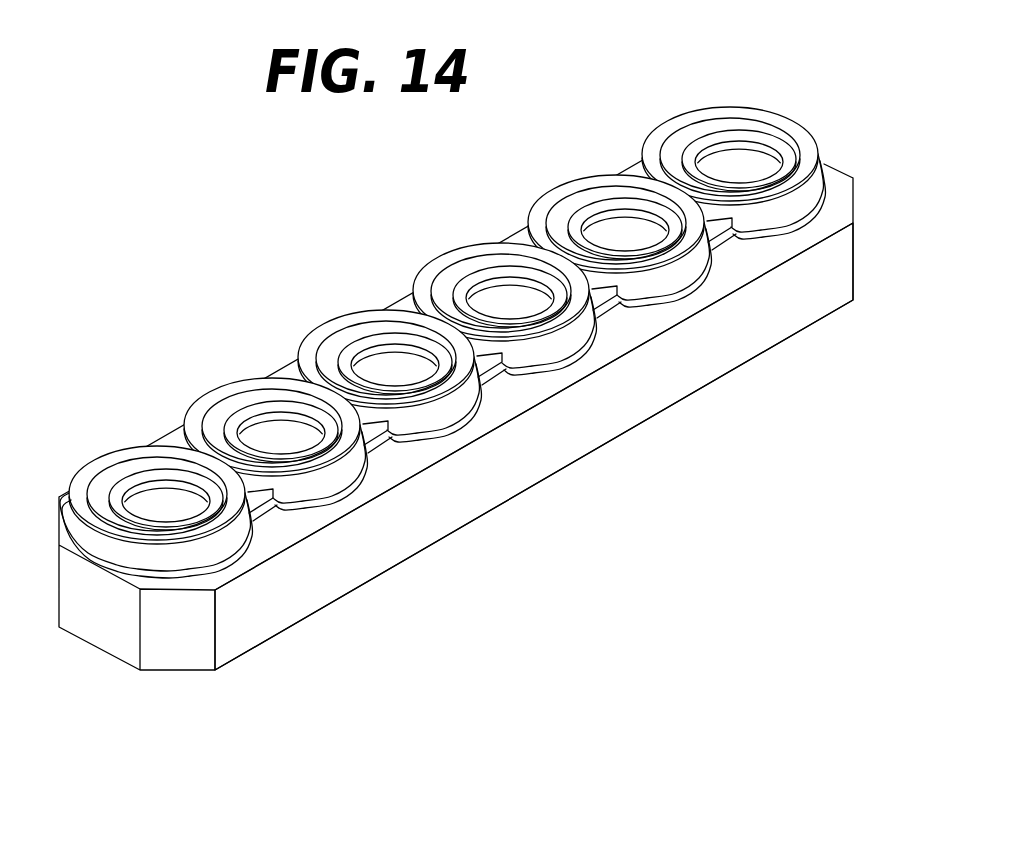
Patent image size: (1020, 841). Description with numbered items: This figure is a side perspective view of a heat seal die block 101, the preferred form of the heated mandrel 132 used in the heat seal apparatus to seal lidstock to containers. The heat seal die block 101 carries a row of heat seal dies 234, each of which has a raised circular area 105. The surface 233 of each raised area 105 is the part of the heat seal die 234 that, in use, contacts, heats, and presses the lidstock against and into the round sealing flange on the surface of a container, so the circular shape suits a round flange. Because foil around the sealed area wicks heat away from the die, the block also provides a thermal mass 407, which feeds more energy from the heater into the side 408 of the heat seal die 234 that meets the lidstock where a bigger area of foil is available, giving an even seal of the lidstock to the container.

The heat seal die block 101 is at (597, 452).
The raised area 105 is at (812, 140).
The heated mandrel 132 is at (797, 294).
The surface 233 is at (127, 485).
The heat seal die 234 is at (183, 548).
The thermal mass 407 is at (328, 327).
The side 408 is at (240, 393).